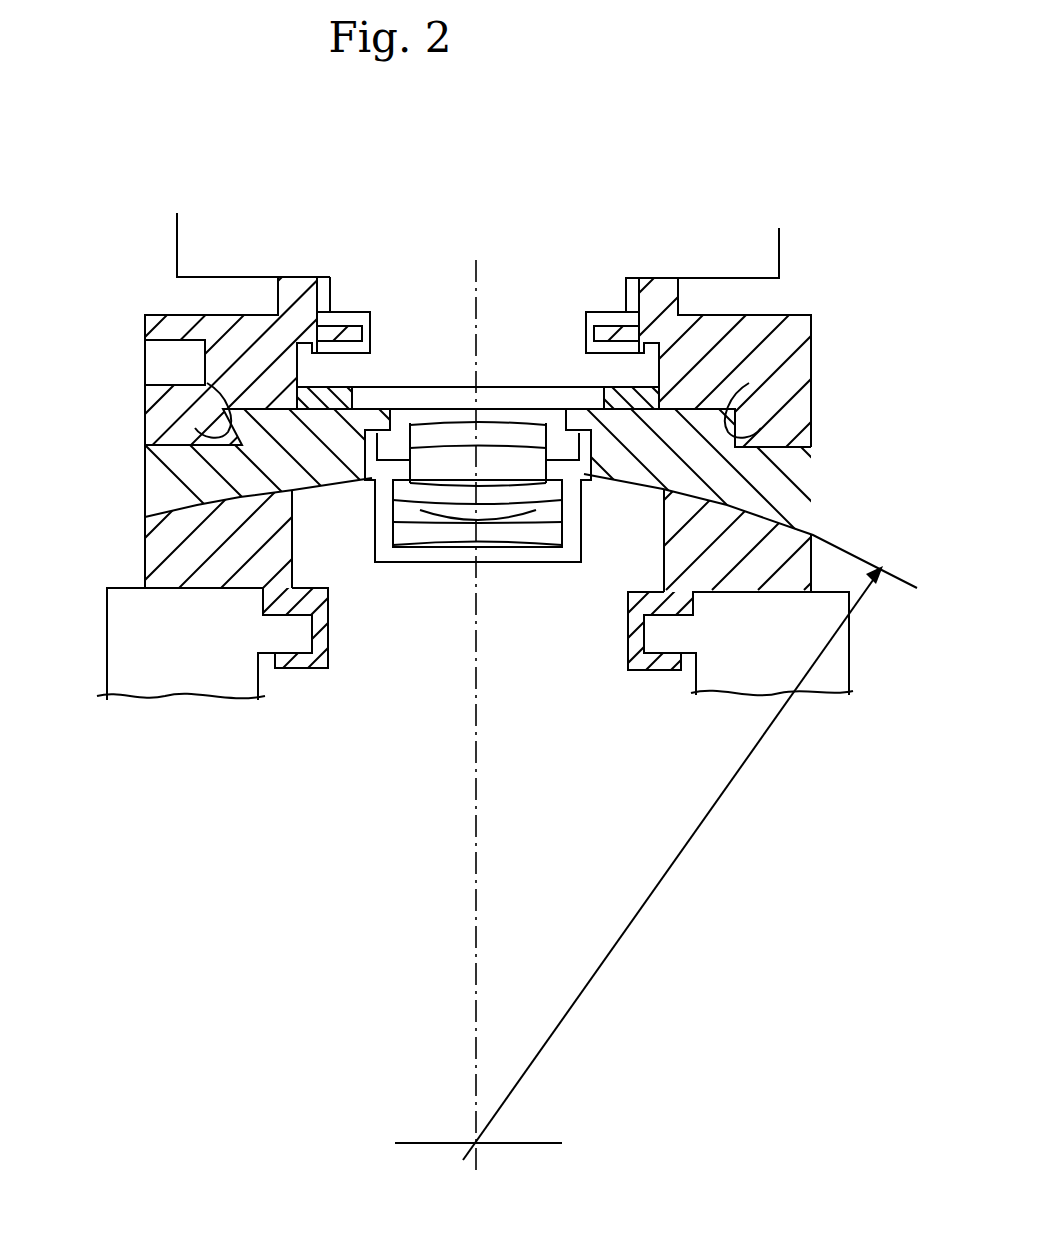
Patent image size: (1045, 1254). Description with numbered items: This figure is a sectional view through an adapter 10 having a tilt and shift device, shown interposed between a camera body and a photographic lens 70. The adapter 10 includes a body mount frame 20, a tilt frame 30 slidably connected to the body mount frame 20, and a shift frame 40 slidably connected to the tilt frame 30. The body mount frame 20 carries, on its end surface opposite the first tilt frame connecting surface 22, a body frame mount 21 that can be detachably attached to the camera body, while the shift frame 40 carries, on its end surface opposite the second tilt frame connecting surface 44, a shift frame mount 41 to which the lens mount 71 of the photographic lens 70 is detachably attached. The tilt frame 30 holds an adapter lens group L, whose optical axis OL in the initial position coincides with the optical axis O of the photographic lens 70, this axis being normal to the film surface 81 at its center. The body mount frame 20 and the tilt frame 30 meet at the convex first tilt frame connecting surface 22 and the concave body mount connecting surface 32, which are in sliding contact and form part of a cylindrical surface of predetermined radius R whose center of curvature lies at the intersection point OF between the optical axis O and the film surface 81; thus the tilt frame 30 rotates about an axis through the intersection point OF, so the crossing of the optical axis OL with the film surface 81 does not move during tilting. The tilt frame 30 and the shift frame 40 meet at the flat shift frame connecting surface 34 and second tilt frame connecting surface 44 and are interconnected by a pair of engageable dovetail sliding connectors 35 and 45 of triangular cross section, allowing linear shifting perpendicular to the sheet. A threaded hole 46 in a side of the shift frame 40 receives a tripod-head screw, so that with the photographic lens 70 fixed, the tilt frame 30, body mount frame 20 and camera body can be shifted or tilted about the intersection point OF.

The adapter 10 is at (481, 414).
The body mount frame 20 is at (486, 586).
The body frame mount 21 is at (263, 660).
The first tilt frame connecting surface 22 is at (160, 550).
The tilt frame 30 is at (507, 463).
The body mount connecting surface 32 is at (170, 515).
The shift frame connecting surface 34 is at (317, 386).
The sliding connector 35 is at (243, 413).
The shift frame 40 is at (481, 335).
The shift frame mount 41 is at (291, 293).
The second tilt frame connecting surface 44 is at (367, 412).
The sliding connector 45 is at (224, 427).
The threaded hole 46 is at (170, 343).
The photographic lens 70 is at (522, 277).
The lens mount 71 is at (373, 333).
The film surface 81 is at (445, 1142).
The adapter lens group L is at (467, 513).
The optical axis O is at (480, 272).
The optical axis of the adapter lens group OL is at (483, 870).
The intersection point OF is at (480, 1142).
The radius R is at (857, 600).